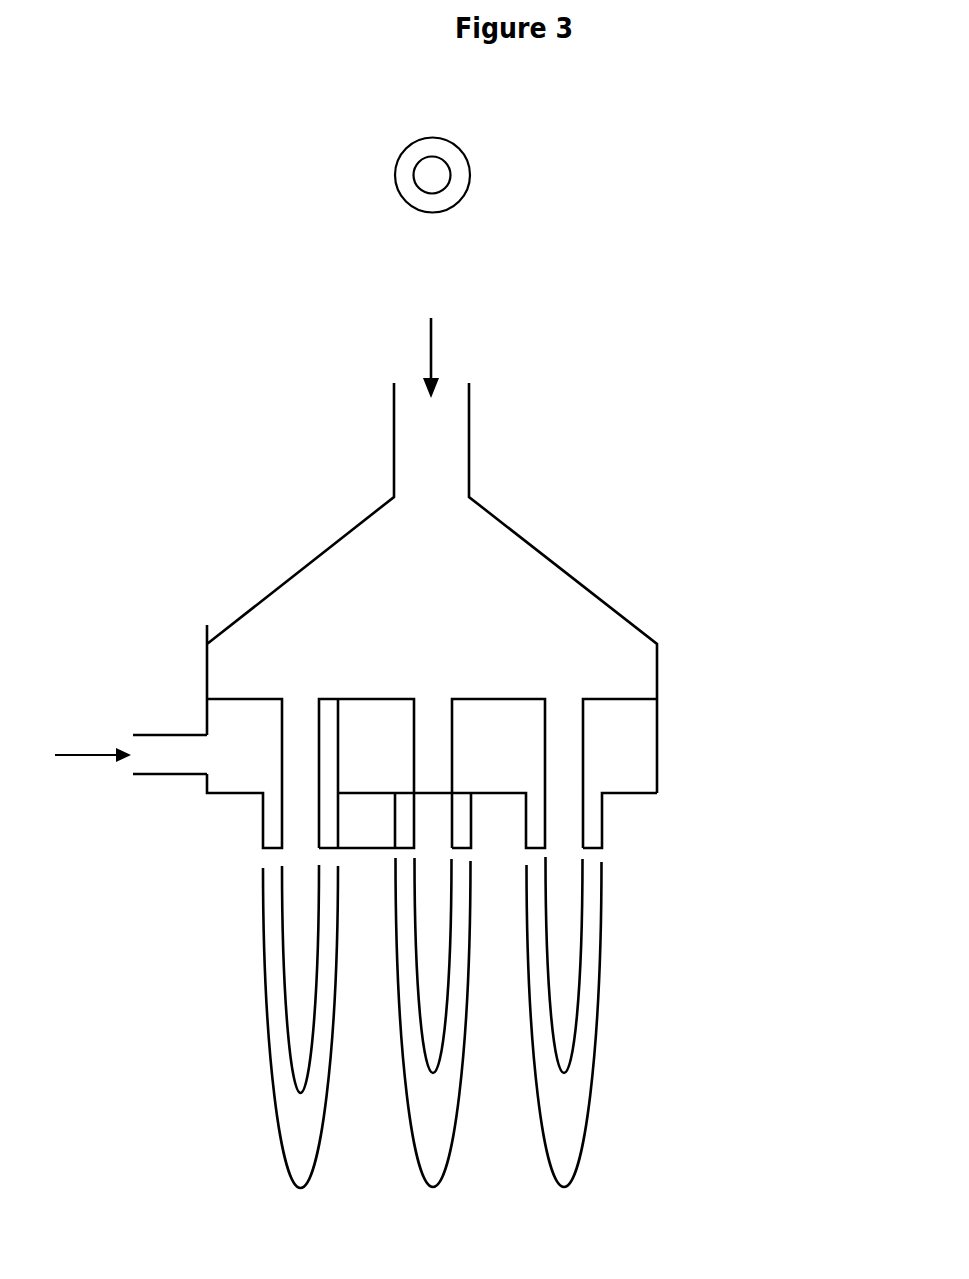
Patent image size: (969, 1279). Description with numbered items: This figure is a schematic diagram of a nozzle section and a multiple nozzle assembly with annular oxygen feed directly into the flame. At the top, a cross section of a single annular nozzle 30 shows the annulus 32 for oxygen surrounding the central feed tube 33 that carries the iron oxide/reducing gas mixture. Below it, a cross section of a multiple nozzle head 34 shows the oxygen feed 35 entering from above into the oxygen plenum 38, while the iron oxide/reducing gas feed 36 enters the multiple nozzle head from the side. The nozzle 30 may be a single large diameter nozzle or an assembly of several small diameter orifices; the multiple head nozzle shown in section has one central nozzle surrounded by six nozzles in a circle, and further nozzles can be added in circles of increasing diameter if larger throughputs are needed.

The nozzle 30 is at (466, 162).
The annulus 32 is at (452, 199).
The central feed tube 33 is at (425, 177).
The multiple nozzle head 34 is at (624, 586).
The oxygen feed 35 is at (446, 358).
The iron oxide/reducing gas feed 36 is at (131, 742).
The oxygen plenum 38 is at (650, 750).